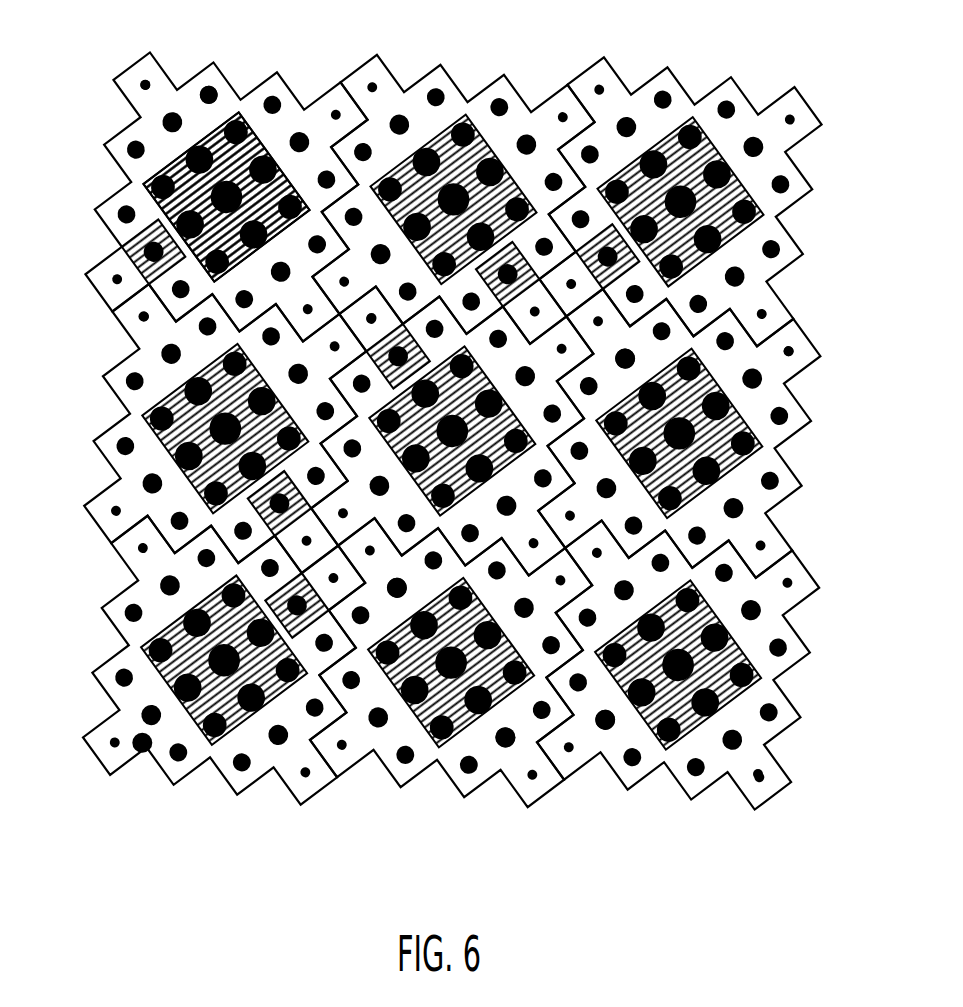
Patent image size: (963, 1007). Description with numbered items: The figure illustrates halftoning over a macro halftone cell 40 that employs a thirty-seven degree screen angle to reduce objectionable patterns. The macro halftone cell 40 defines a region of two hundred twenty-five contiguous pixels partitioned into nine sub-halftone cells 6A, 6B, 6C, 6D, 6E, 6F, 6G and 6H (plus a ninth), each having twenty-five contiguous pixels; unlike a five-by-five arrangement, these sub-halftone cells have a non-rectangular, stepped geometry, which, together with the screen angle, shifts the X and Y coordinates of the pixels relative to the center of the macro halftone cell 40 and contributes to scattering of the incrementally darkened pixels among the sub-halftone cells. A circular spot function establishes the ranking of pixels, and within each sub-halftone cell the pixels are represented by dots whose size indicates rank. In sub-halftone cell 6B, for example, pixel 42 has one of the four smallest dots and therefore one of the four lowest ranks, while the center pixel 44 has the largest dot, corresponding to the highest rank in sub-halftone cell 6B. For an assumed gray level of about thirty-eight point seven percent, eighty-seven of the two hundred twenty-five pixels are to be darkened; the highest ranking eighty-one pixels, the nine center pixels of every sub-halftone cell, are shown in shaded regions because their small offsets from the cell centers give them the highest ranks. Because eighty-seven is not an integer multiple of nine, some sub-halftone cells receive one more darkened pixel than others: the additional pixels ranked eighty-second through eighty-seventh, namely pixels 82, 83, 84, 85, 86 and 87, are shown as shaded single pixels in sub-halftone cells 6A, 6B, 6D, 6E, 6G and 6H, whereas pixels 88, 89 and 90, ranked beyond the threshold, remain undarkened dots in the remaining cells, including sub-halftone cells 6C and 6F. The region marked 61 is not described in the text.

The macro halftone cell 40 is at (11, 485).
The pixel 42 is at (151, 78).
The center pixel 44 is at (250, 135).
The supercell boundary region 61 is at (803, 357).
The 82nd ranked pixel 82 is at (398, 350).
The 83rd ranked pixel 83 is at (508, 262).
The 84th ranked pixel 84 is at (120, 246).
The 85th ranked pixel 85 is at (632, 290).
The 86th ranked pixel 86 is at (265, 522).
The 87th ranked pixel 87 is at (306, 614).
The 88th ranked pixel 88 is at (396, 592).
The 89th ranked pixel 89 is at (605, 722).
The 90th ranked pixel 90 is at (628, 357).
The sub-halftone cell 6A is at (372, 306).
The sub-halftone cell 6B is at (189, 98).
The sub-halftone cell 6C is at (496, 757).
The sub-halftone cell 6D is at (618, 99).
The sub-halftone cell 6E is at (147, 335).
The sub-halftone cell 6F is at (759, 760).
The sub-halftone cell 6G is at (160, 743).
The sub-halftone cell 6H is at (387, 99).